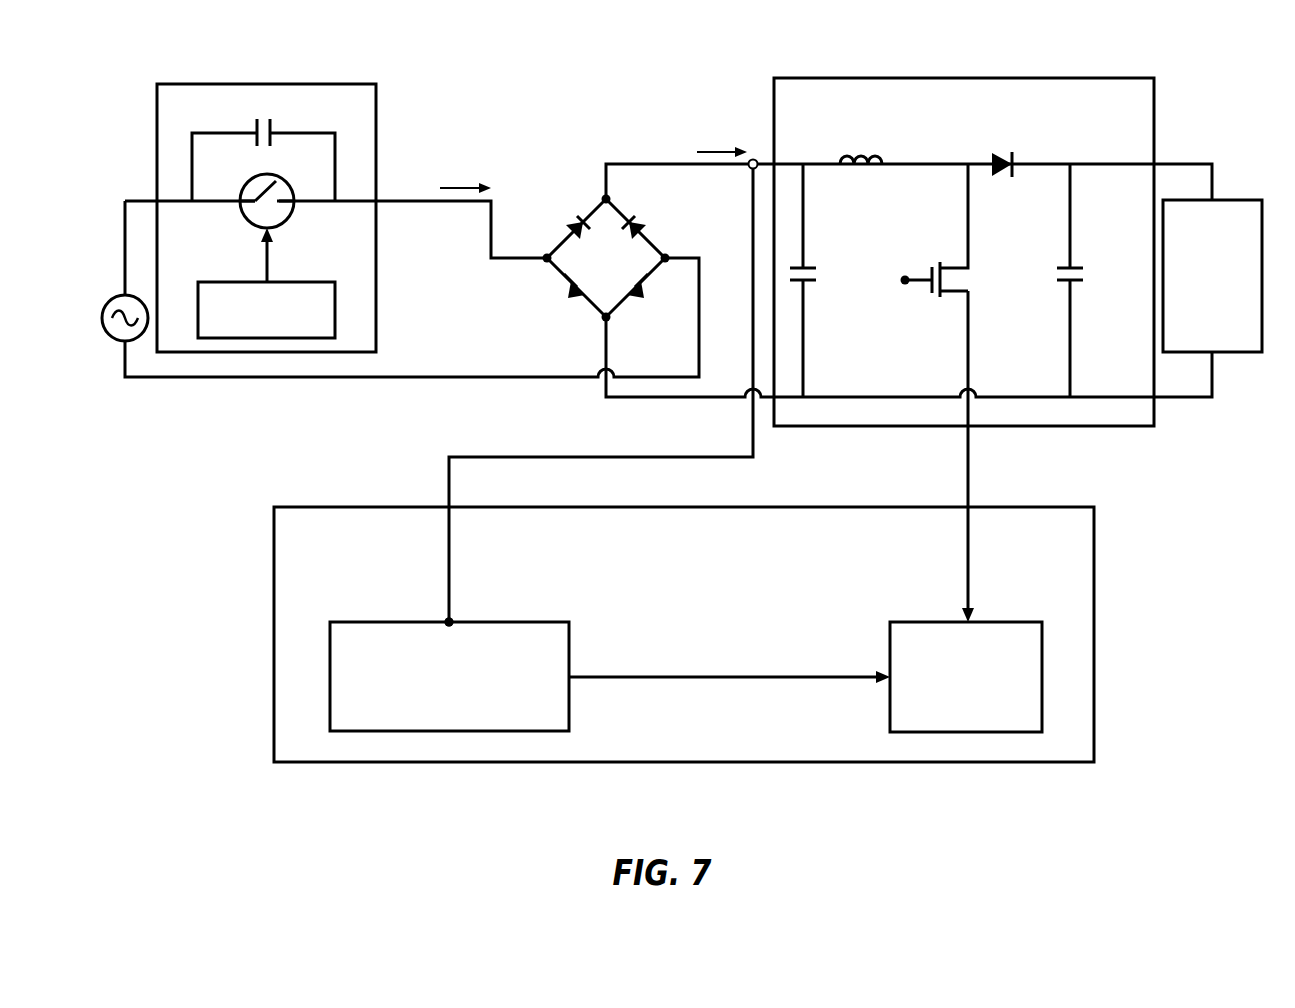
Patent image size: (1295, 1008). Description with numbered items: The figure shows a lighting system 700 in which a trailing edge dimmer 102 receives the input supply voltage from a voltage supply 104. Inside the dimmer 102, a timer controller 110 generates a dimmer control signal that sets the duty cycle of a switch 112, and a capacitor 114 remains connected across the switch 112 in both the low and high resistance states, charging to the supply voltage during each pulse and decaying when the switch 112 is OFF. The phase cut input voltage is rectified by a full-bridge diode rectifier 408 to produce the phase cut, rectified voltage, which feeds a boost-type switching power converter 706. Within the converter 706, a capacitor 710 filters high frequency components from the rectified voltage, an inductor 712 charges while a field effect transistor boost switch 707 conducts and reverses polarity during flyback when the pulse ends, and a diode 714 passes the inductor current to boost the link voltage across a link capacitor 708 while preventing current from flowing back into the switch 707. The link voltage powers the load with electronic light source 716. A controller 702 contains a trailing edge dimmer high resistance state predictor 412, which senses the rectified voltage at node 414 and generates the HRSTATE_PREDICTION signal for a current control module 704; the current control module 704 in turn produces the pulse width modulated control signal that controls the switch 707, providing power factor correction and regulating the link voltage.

The lighting system 700 is at (1177, 98).
The dimmer 102 is at (376, 140).
The voltage supply 104 is at (114, 299).
The timer controller 110 is at (300, 281).
The switch 112 is at (247, 221).
The capacitor 114 is at (273, 121).
The full-bridge diode rectifier 408 is at (606, 258).
The trailing edge dimmer high resistance state predictor 412 is at (449, 676).
The node 414 is at (453, 620).
The controller 702 is at (684, 634).
The current control module 704 is at (966, 677).
The switching power converter 706 is at (1003, 78).
The boost switch 707 is at (954, 289).
The link capacitor 708 is at (1075, 268).
The capacitor 710 is at (808, 268).
The inductor 712 is at (872, 170).
The diode 714 is at (1015, 155).
The load with electronic light source 716 is at (1212, 276).